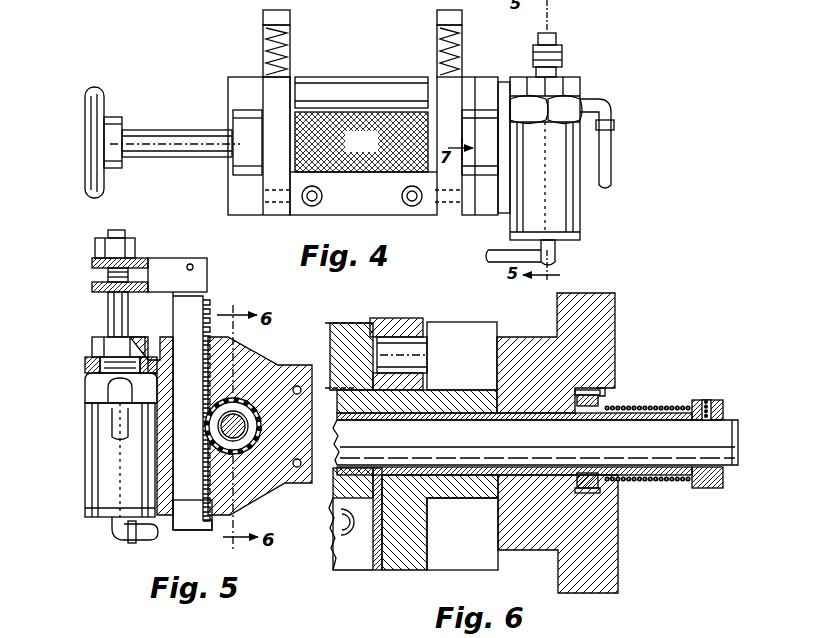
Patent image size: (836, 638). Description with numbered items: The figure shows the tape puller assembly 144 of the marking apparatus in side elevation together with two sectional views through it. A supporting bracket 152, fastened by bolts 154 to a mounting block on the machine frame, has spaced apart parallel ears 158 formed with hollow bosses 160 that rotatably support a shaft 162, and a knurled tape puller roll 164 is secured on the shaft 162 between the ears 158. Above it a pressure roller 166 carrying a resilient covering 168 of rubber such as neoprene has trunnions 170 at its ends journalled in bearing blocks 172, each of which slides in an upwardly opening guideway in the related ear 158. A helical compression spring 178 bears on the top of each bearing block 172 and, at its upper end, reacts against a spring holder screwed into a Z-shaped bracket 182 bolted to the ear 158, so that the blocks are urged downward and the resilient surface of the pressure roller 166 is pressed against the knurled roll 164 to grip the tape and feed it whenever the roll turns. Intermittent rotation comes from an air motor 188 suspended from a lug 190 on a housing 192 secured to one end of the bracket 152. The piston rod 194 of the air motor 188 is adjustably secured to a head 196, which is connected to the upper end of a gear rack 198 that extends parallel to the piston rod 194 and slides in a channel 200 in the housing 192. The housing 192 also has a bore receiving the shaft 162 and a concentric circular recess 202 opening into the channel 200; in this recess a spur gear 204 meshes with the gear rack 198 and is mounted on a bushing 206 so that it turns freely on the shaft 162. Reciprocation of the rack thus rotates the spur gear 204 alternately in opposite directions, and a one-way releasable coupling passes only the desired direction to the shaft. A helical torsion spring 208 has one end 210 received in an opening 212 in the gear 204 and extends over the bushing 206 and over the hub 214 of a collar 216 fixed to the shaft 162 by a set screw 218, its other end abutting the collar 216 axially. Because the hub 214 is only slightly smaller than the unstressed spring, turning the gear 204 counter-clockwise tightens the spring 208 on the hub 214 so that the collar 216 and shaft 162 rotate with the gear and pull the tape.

In FIG. 4, the tape puller assembly 144 is at (205, 66).
In FIG. 4, the supporting bracket 152 is at (240, 198).
In FIG. 6, the supporting bracket 152 is at (353, 563).
In FIG. 4, the bolts 154 is at (412, 200).
In FIG. 4, the ears 158 is at (270, 88).
In FIG. 6, the ears 158 is at (410, 566).
In FIG. 4, the hollow bosses 160 is at (242, 168).
In FIG. 6, the hollow bosses 160 is at (442, 397).
In FIG. 4, the shaft 162 is at (220, 135).
In FIG. 5, the shaft 162 is at (240, 414).
In FIG. 6, the shaft 162 is at (472, 445).
In FIG. 4, the knurled tape puller roll 164 is at (372, 150).
In FIG. 6, the knurled tape puller roll 164 is at (331, 522).
In FIG. 6, the pressure roller 166 is at (362, 318).
In FIG. 4, the resilient covering 168 is at (390, 82).
In FIG. 6, the resilient covering 168 is at (327, 323).
In FIG. 6, the trunnions 170 is at (433, 324).
In FIG. 6, the bearing blocks 172 is at (398, 325).
In FIG. 4, the helical compression spring 178 is at (265, 42).
In FIG. 4, the Z-shaped bracket 182 is at (270, 16).
In FIG. 4, the air motor 188 is at (575, 213).
In FIG. 5, the air motor 188 is at (95, 457).
In FIG. 5, the lug 190 is at (88, 362).
In FIG. 4, the housing 192 is at (507, 90).
In FIG. 5, the housing 192 is at (262, 490).
In FIG. 6, the housing 192 is at (537, 345).
In FIG. 5, the piston rod 194 is at (113, 320).
In FIG. 5, the head 196 is at (170, 263).
In FIG. 5, the gear rack 198 is at (175, 323).
In FIG. 5, the channel 200 is at (176, 503).
In FIG. 5, the circular recess 202 is at (248, 408).
In FIG. 6, the circular recess 202 is at (607, 493).
In FIG. 5, the spur gear 204 is at (258, 432).
In FIG. 6, the spur gear 204 is at (600, 405).
In FIG. 6, the bushing 206 is at (615, 480).
In FIG. 6, the helical torsion spring 208 is at (622, 408).
In FIG. 6, the end of spring 210 is at (596, 398).
In FIG. 6, the opening 212 is at (598, 392).
In FIG. 6, the hub 214 is at (680, 483).
In FIG. 6, the collar 216 is at (723, 490).
In FIG. 6, the set screw 218 is at (703, 403).